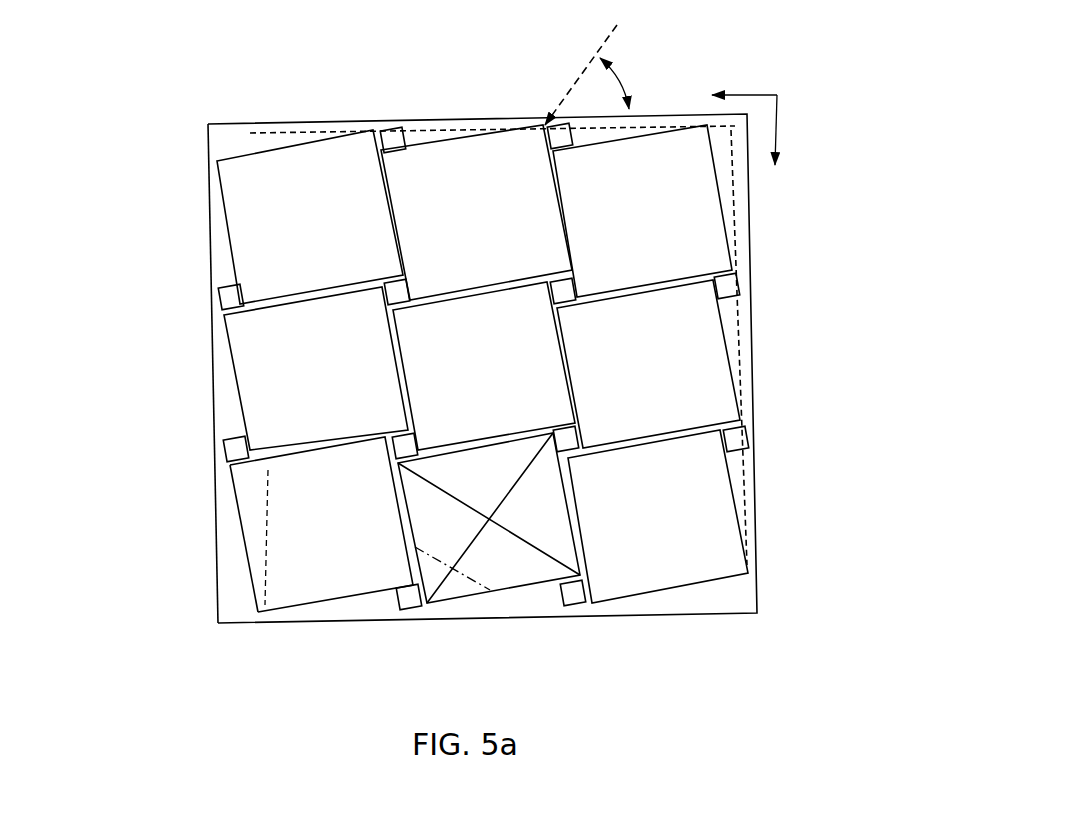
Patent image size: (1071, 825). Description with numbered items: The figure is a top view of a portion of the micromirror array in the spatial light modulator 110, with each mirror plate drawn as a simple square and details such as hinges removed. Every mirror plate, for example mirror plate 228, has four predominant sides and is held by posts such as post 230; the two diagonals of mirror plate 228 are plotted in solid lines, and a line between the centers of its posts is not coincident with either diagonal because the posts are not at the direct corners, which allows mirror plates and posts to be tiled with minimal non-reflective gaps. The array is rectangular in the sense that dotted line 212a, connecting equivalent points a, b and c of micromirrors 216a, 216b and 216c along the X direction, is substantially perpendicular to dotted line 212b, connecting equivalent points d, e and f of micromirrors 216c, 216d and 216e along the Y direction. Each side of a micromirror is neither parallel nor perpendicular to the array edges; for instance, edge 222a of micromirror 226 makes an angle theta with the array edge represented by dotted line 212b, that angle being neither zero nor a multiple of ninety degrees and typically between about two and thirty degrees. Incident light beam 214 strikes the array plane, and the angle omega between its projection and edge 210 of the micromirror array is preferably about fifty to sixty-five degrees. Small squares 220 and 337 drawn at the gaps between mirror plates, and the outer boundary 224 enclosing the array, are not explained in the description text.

The spatial light modulator 110 is at (175, 133).
The edge of the micromirror array 210 is at (287, 122).
The dotted line 212a is at (433, 132).
The dotted line 212b is at (742, 345).
The incident light beam 214 is at (580, 72).
The micromirror 216a is at (284, 226).
The micromirror 216b is at (460, 224).
The micromirror 216c is at (602, 217).
The micromirror 216d is at (613, 374).
The micromirror 216e is at (622, 524).
The alignment marks 220 is at (237, 450).
The edge of micromirror 222a is at (245, 528).
The substrate edge 224 is at (218, 590).
The micromirror 226 is at (273, 562).
The mirror plate 228 is at (507, 567).
The post 230 is at (577, 600).
The alignment mark 337 is at (400, 434).